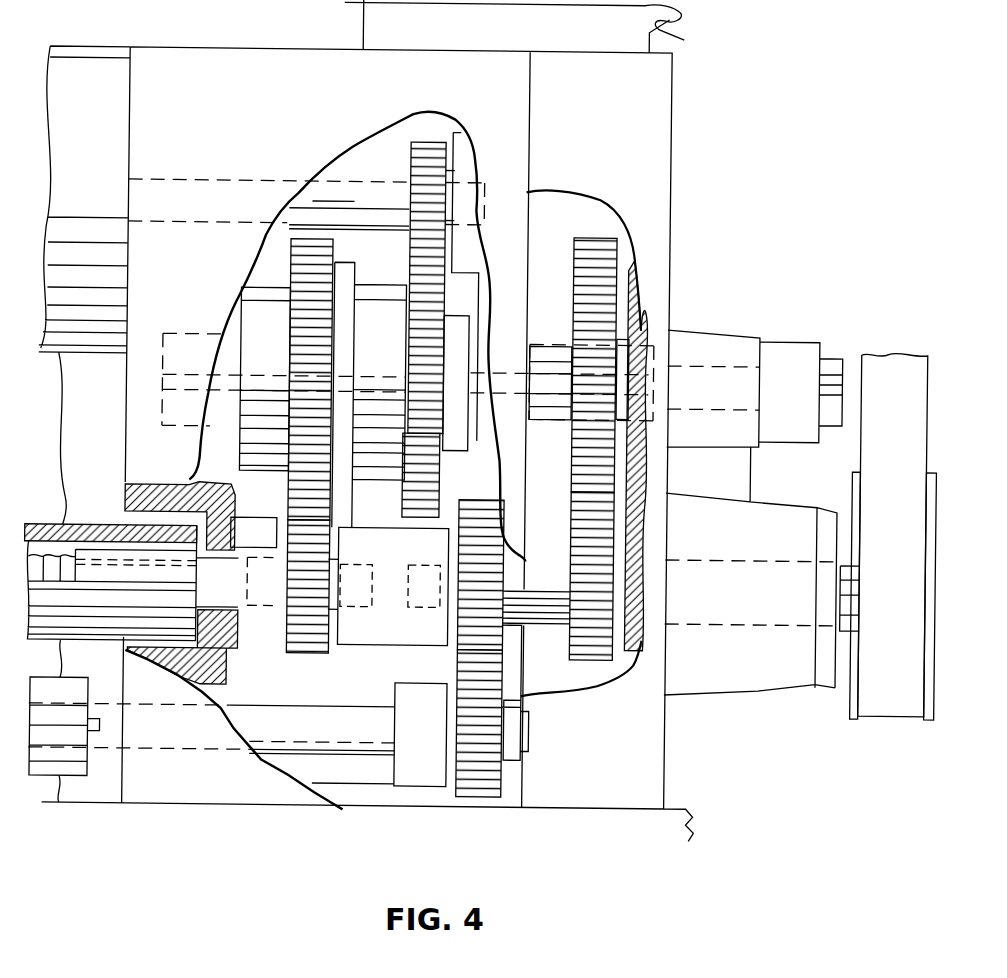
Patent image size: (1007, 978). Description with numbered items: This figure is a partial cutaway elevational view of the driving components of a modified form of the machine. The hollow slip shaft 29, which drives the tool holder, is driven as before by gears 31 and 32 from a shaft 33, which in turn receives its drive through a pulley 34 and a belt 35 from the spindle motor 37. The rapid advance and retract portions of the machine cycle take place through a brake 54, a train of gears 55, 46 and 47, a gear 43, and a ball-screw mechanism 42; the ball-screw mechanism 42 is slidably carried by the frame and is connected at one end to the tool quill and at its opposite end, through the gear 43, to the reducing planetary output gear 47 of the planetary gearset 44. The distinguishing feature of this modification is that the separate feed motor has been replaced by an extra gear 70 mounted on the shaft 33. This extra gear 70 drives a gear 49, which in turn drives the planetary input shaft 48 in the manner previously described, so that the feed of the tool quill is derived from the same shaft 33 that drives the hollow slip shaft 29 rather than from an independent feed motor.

The hollow slip shaft 29 is at (363, 762).
The gear 31 is at (480, 797).
The gear 32 is at (460, 659).
The shaft 33 is at (551, 622).
The pulley 34 is at (856, 703).
The belt 35 is at (890, 352).
The spindle motor 37 is at (532, 27).
The ball-screw mechanism 42 is at (228, 675).
The gear 43 is at (318, 648).
The planetary gearset 44 is at (392, 491).
The gear 46 is at (438, 503).
The reducing planetary output gear 47 is at (288, 500).
The planetary input shaft 48 is at (476, 342).
The gear 49 is at (572, 492).
The brake 54 is at (99, 50).
The gear 55 is at (408, 162).
The extra gear 70 is at (572, 548).